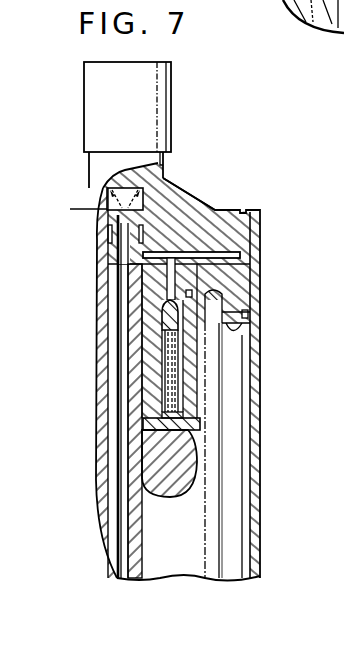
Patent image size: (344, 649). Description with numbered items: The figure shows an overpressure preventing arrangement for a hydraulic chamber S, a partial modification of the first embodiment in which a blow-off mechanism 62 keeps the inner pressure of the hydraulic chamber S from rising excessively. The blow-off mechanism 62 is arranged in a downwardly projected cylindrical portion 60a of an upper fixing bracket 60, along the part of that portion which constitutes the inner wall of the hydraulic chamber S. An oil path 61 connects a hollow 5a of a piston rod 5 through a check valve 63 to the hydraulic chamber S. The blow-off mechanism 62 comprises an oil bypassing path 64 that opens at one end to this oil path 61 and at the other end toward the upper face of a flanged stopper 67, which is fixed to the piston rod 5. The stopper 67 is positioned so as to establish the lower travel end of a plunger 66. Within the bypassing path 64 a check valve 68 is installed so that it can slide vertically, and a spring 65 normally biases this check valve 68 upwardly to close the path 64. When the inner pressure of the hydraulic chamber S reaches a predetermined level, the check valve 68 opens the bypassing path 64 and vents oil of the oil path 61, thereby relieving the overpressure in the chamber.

The piston rod 5 is at (135, 548).
The hollow of piston rod 5a is at (120, 490).
The upper fixing bracket 60 is at (213, 210).
The downwardly projected cylindrical portion 60a is at (200, 217).
The oil path 61 is at (160, 242).
The blow-off mechanism 62 is at (187, 364).
The check valve 63 is at (98, 195).
The oil bypassing path 64 is at (145, 250).
The spring 65 is at (98, 388).
The plunger 66 is at (246, 303).
The flanged stopper 67 is at (200, 427).
The check valve 68 is at (167, 320).
The hydraulic chamber S is at (240, 255).